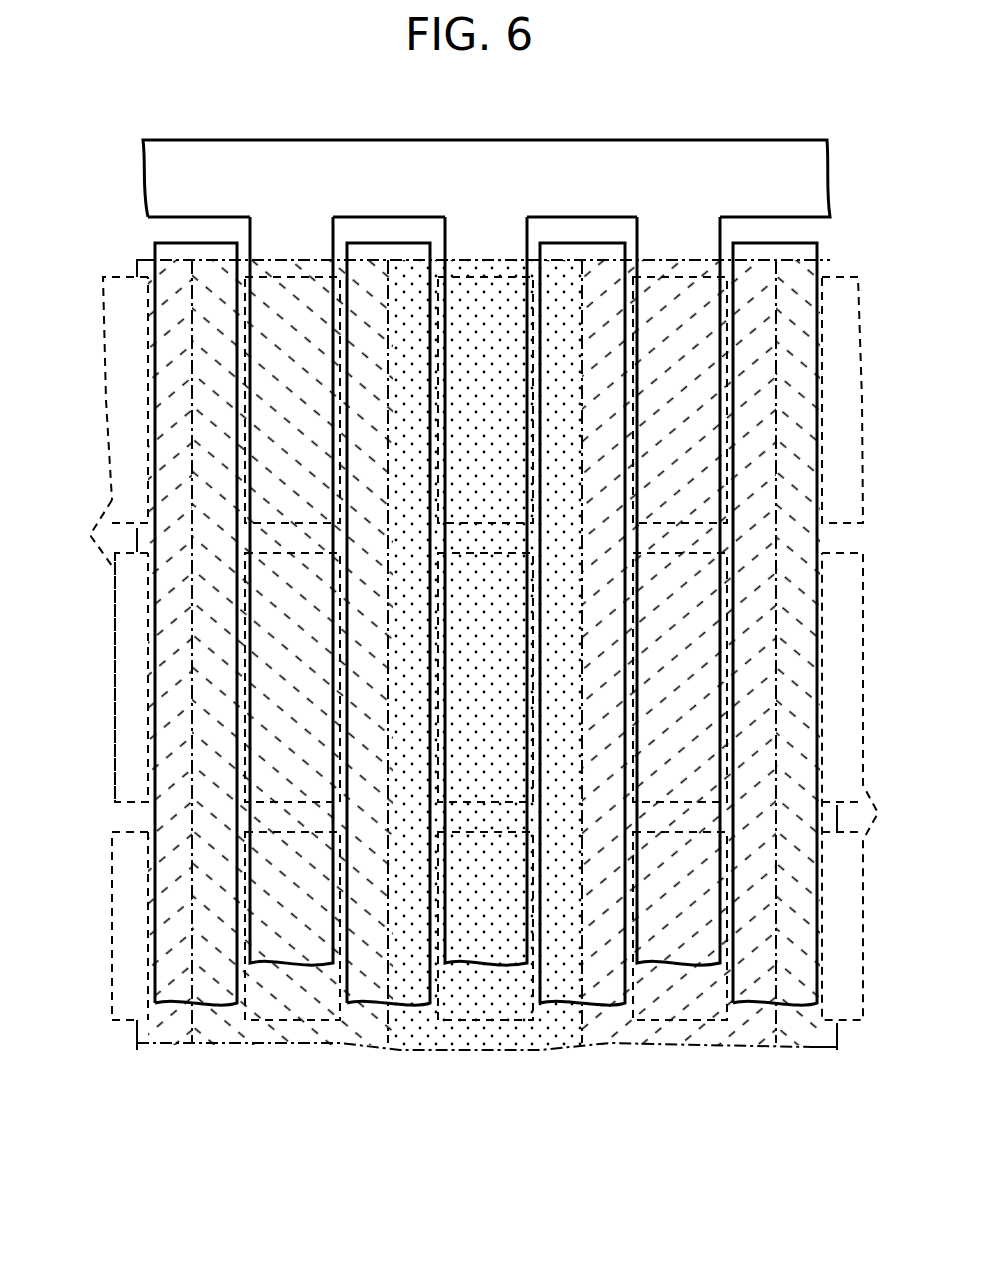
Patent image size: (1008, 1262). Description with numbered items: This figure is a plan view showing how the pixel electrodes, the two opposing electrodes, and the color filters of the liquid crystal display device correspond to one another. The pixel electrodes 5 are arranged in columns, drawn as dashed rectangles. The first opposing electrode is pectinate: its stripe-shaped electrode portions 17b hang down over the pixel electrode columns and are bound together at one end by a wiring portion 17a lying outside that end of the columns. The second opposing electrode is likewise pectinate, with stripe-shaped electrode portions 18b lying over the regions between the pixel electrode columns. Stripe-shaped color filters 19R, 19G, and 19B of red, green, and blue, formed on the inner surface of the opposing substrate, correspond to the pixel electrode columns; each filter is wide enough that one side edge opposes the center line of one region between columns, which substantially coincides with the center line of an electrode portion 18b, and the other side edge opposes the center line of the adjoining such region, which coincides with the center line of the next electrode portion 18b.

The pixel electrode 5 is at (298, 277).
The wiring portion 17a is at (790, 160).
The stripe-shaped electrode portion 17b is at (286, 950).
The stripe-shaped electrode portion 18b is at (155, 246).
The red color filter 19R is at (163, 1040).
The green color filter 19G is at (232, 1040).
The blue color filter 19B is at (415, 1043).